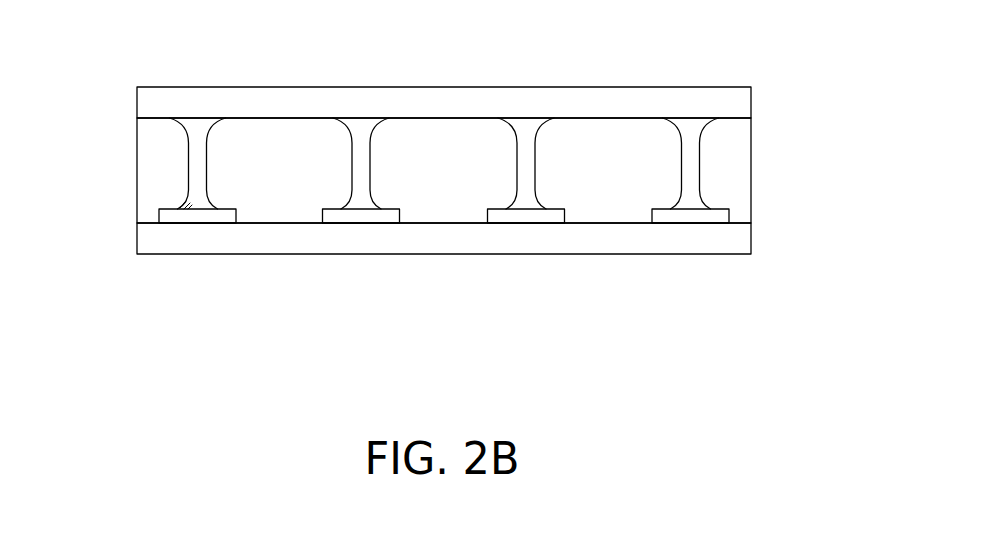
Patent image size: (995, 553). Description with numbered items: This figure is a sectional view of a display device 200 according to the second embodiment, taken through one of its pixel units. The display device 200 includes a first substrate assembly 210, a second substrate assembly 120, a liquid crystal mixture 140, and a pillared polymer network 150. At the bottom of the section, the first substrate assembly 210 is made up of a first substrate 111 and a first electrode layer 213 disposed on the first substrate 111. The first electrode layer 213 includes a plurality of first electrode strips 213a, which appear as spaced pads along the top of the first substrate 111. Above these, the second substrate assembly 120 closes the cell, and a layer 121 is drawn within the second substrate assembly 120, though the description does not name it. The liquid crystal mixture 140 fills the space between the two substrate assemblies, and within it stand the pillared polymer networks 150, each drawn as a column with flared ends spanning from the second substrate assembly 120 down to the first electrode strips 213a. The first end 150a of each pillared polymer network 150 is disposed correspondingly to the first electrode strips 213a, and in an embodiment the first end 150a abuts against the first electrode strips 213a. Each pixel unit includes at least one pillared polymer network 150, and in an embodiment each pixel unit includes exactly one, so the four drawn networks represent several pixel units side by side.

The display device 200 is at (27, 99).
The second substrate assembly 120 is at (718, 65).
The light emitting layer 121 is at (738, 102).
The liquid crystal mixture 140 is at (738, 163).
The pillared polymer network 150 is at (196, 170).
The first end of the pillared polymer network 150a is at (193, 205).
The first substrate assembly 210 is at (480, 318).
The first substrate 111 is at (735, 238).
The first electrode layer 213 is at (447, 289).
The first electrode strips 213a is at (198, 213).